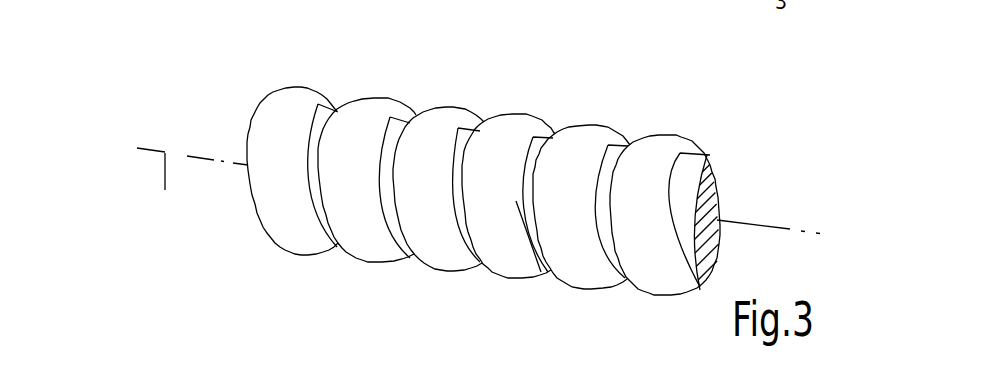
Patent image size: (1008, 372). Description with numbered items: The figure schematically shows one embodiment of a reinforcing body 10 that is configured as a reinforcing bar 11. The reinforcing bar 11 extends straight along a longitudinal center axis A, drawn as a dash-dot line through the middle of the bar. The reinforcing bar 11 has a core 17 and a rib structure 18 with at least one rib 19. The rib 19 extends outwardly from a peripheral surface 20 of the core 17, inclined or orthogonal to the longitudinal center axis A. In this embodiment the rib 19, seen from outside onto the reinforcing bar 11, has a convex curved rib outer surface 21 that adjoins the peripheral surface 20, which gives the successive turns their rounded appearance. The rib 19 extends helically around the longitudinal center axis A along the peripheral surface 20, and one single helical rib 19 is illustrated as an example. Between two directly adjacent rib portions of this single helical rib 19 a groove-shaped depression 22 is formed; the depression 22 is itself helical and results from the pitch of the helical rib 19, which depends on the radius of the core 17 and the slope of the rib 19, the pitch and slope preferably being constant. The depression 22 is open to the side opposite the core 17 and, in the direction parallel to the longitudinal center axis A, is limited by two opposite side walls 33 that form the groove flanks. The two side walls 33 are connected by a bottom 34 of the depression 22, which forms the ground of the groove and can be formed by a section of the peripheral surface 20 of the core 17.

The reinforcing body 10 is at (450, 186).
The reinforcing bar 11 is at (450, 186).
The core 17 is at (710, 187).
The rib structure 18 is at (266, 74).
The rib 19 is at (373, 115).
The peripheral surface 20 is at (469, 128).
The rib outer surface 21 is at (648, 160).
The groove-shaped depression 22 is at (318, 130).
The side walls 33 is at (536, 185).
The bottom 34 is at (540, 150).
The longitudinal center axis A is at (160, 200).